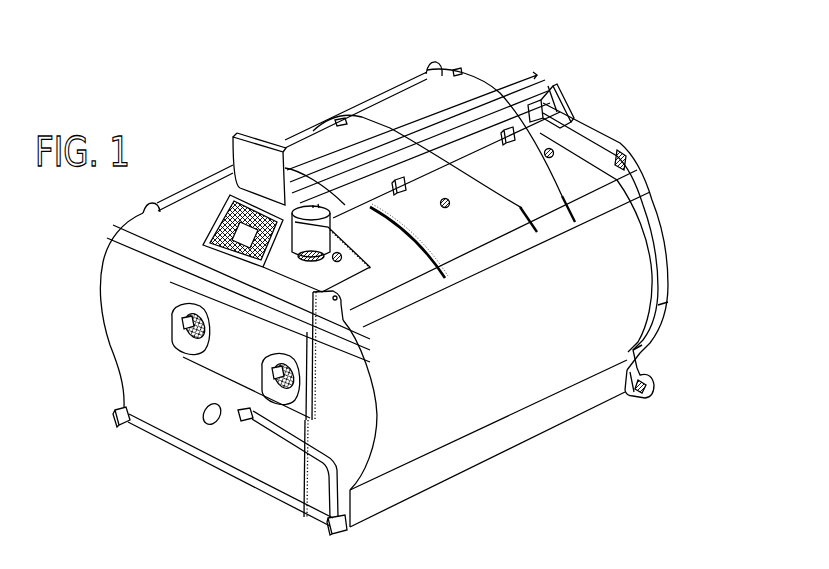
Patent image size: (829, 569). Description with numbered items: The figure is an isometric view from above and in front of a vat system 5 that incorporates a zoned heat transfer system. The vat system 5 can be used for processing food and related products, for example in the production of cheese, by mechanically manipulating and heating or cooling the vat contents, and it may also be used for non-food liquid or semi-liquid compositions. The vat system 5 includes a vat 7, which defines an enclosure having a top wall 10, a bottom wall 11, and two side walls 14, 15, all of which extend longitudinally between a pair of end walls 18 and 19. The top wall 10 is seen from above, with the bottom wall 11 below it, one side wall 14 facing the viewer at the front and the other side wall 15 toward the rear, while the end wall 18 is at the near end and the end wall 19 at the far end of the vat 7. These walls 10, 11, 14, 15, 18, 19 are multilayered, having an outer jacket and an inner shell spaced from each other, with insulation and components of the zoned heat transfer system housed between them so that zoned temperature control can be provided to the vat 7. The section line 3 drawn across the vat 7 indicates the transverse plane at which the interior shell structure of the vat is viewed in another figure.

The section line 3- 3 is at (136, 213).
The vat system 5 is at (557, 53).
The vat 7 is at (612, 330).
The top wall 10 is at (481, 96).
The bottom wall 11 is at (231, 476).
The side wall 14 is at (98, 282).
The side wall 15 is at (627, 277).
The end wall 18 is at (123, 310).
The end wall 19 is at (662, 232).